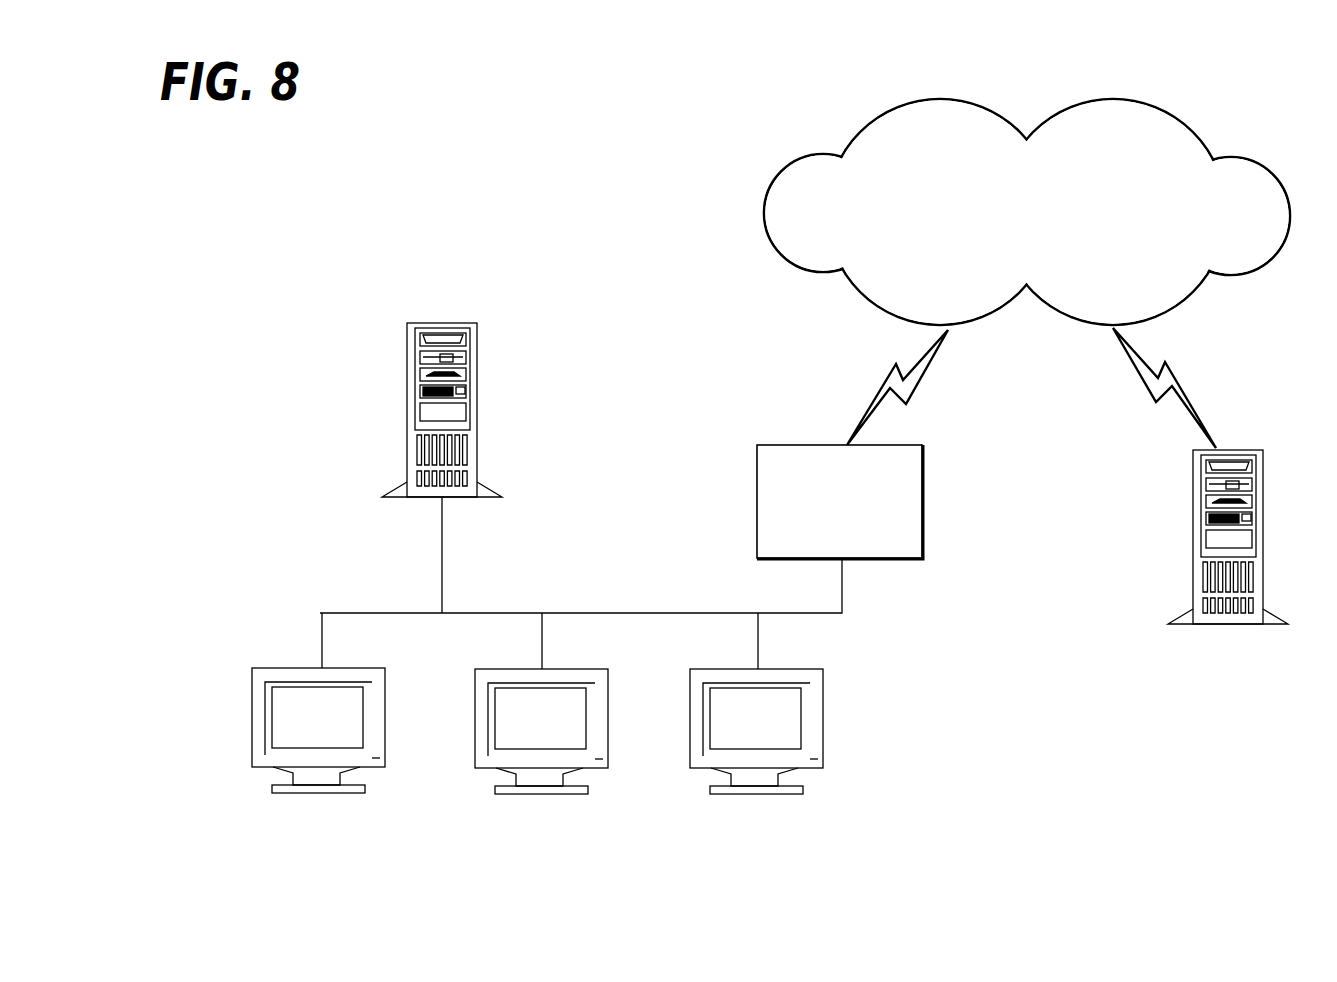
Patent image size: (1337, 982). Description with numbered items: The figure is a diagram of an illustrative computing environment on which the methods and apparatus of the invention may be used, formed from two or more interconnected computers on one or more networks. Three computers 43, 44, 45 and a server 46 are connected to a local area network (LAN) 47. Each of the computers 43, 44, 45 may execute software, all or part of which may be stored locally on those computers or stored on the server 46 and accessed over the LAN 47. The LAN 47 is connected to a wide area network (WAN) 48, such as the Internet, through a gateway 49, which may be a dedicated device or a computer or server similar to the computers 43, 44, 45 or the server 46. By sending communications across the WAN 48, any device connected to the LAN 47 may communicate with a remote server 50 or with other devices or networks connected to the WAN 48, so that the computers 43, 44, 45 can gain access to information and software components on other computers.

The computer 43 is at (323, 793).
The computer 44 is at (546, 794).
The computer 45 is at (763, 794).
The server 46 is at (407, 418).
The local area network (LAN) 47 is at (842, 590).
The wide area network (WAN) 48 is at (765, 218).
The gateway 49 is at (757, 505).
The remote server 50 is at (1193, 528).